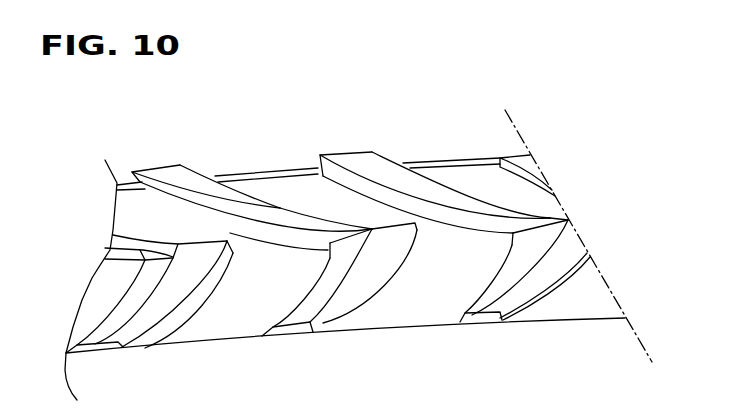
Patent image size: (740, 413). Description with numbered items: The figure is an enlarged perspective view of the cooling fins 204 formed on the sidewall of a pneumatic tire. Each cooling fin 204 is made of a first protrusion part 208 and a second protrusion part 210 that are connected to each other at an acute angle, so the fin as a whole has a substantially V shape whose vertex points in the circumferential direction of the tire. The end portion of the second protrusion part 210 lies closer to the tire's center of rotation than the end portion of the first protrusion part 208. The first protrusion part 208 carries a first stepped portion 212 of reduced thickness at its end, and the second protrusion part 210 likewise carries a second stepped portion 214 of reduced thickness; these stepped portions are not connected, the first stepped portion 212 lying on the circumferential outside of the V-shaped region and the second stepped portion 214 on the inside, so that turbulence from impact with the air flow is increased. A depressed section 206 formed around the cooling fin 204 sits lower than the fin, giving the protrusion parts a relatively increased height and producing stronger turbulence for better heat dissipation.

The cooling fin 204 is at (392, 152).
The depressed section 206 is at (218, 327).
The first protrusion part 208 is at (210, 190).
The second protrusion part 210 is at (352, 288).
The first stepped portion 212 is at (237, 190).
The second stepped portion 214 is at (326, 279).